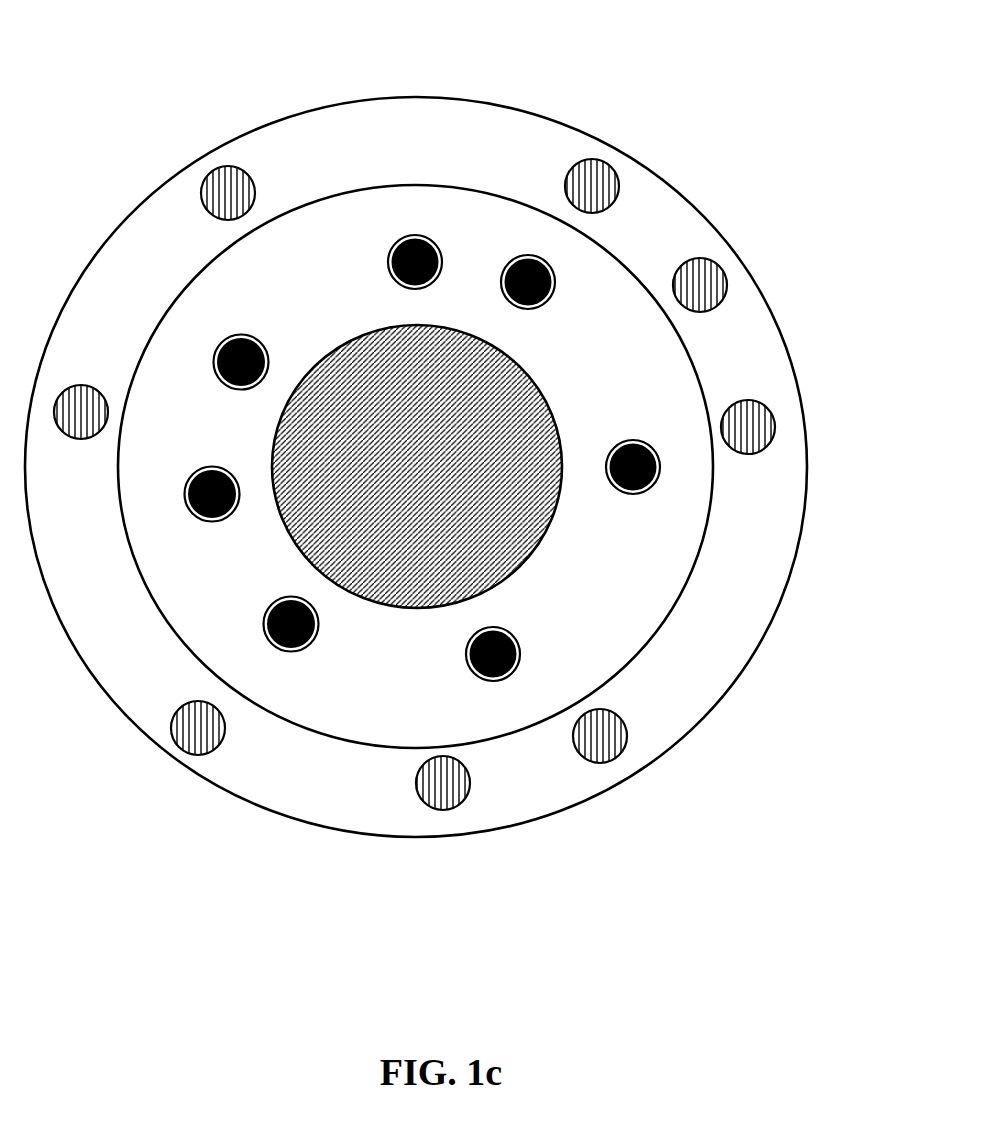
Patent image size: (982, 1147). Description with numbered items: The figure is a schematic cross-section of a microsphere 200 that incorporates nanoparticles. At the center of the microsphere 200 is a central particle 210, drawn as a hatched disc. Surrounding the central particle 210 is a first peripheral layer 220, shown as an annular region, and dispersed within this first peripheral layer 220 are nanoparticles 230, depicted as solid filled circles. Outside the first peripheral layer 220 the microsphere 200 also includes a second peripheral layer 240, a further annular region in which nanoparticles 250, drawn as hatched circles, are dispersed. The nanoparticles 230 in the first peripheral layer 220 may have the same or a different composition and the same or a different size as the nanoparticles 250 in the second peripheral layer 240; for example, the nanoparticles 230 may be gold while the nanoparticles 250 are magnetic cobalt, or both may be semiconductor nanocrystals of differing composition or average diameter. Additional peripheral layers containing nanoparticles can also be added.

The microsphere 200 is at (440, 493).
The central particle 210 is at (435, 535).
The first peripheral layer 220 is at (593, 575).
The nanoparticles 230 is at (522, 255).
The second peripheral layer 240 is at (440, 467).
The nanoparticles 250 is at (460, 805).